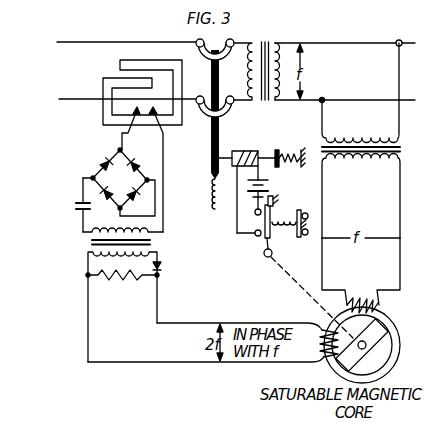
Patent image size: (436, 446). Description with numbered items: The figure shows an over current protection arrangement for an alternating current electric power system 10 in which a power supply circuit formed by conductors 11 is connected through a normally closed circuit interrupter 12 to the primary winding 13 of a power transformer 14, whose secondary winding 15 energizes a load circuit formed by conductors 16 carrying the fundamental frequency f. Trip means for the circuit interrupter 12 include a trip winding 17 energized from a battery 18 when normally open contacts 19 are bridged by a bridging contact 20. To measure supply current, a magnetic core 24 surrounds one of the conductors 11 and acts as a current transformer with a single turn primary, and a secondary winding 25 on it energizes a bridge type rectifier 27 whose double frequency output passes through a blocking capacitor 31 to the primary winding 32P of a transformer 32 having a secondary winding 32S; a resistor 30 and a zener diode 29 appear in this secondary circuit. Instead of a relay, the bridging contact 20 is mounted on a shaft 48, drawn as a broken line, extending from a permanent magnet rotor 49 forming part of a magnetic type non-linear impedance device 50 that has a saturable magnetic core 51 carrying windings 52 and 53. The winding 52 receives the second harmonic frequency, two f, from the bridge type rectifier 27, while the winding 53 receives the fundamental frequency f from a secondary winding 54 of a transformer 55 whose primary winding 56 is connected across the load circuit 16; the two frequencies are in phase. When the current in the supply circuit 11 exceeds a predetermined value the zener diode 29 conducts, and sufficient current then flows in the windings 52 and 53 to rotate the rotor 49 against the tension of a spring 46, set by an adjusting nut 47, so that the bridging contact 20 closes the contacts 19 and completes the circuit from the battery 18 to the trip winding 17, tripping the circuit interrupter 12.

The alternating current electric power system 10 is at (164, 32).
The power supply circuit conductors 11 is at (79, 42).
The circuit interrupter 12 is at (238, 110).
The primary winding 13 is at (250, 71).
The power transformer 14 is at (278, 35).
The secondary winding 15 is at (284, 63).
The load circuit conductors 16 is at (367, 43).
The trip winding 17 is at (256, 150).
The battery 18 is at (268, 188).
The normally open contacts 19 is at (237, 227).
The bridging contact 20 is at (256, 238).
The magnetic core 24 is at (130, 60).
The secondary winding 25 is at (145, 135).
The bridge type rectifier 27 is at (95, 152).
The zener diode 29 is at (160, 266).
The resistor 30 is at (122, 280).
The blocking capacitor 31 is at (75, 205).
The transformer 32 is at (76, 241).
The primary winding 32P is at (86, 231).
The secondary winding 32S is at (90, 254).
The spring 46 is at (279, 215).
The adjusting nut 47 is at (298, 240).
The shaft 48 is at (283, 273).
The permanent magnet rotor 49 is at (380, 338).
The non-linear impedance device 50 is at (398, 369).
The saturable magnetic core 51 is at (396, 351).
The winding 52 is at (322, 332).
The winding 53 is at (365, 290).
The secondary winding 54 is at (366, 163).
The transformer 55 is at (422, 134).
The primary winding 56 is at (344, 133).